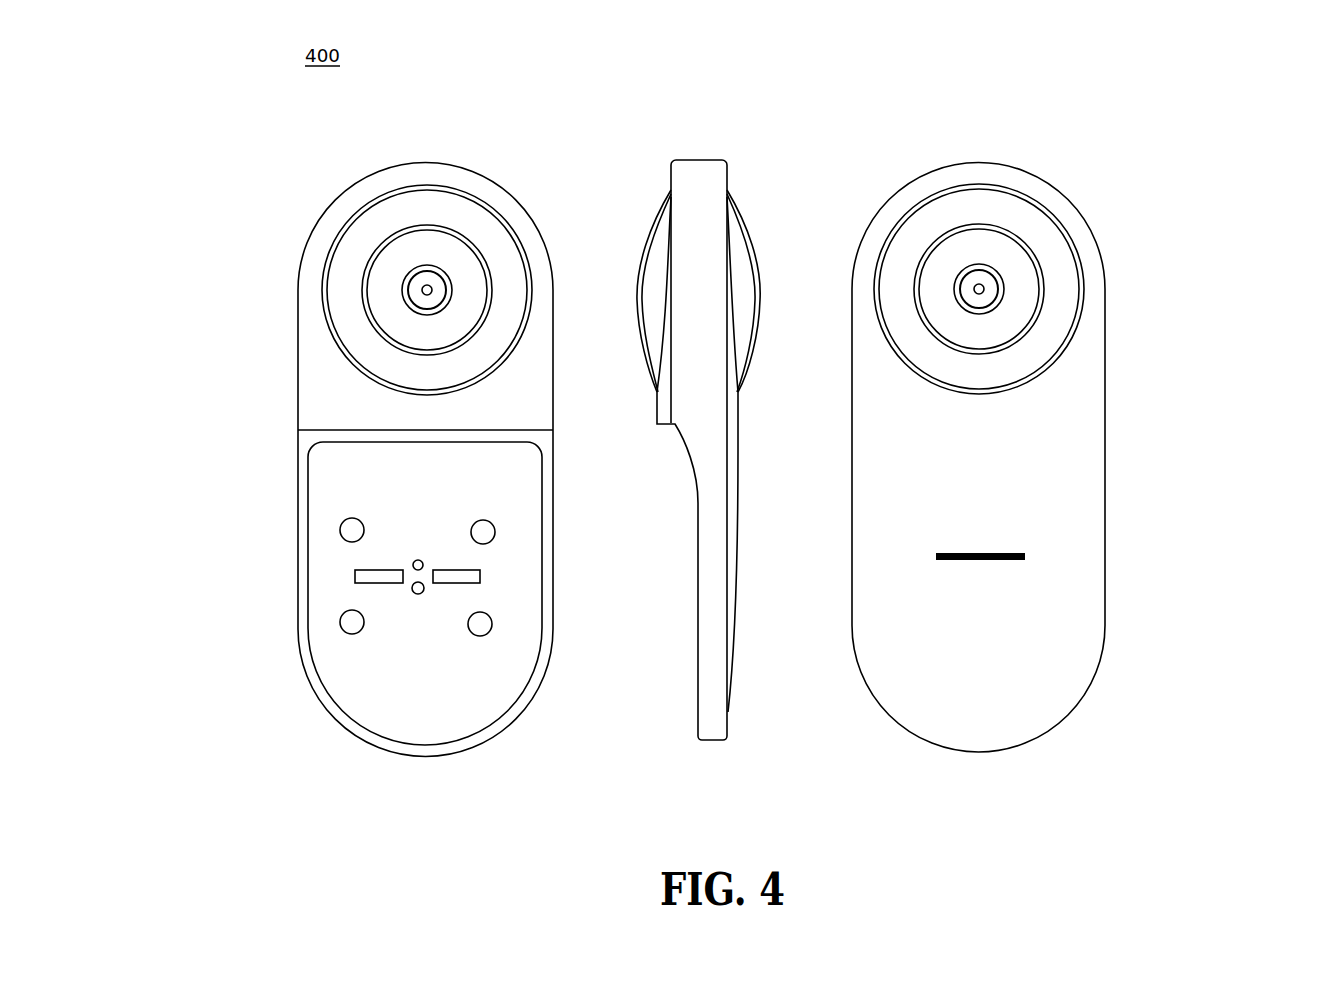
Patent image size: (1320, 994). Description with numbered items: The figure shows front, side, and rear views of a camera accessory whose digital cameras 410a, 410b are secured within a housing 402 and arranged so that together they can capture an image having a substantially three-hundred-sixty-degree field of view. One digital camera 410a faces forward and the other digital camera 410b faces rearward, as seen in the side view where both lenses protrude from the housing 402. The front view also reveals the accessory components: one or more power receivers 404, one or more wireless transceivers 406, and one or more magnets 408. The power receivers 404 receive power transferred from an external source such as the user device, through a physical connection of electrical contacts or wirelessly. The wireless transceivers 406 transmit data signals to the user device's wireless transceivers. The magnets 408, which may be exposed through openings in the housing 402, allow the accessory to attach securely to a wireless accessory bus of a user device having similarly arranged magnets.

The housing 402 is at (1157, 410).
The power receiver 404 is at (410, 595).
The wireless transceiver 406 is at (352, 577).
The magnet 408 is at (490, 640).
The digital camera 410a is at (641, 219).
The digital camera 410b is at (1005, 289).